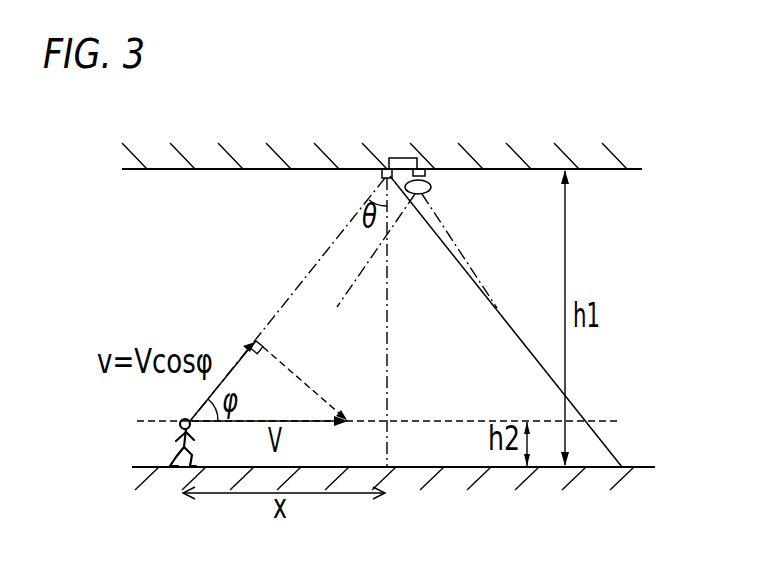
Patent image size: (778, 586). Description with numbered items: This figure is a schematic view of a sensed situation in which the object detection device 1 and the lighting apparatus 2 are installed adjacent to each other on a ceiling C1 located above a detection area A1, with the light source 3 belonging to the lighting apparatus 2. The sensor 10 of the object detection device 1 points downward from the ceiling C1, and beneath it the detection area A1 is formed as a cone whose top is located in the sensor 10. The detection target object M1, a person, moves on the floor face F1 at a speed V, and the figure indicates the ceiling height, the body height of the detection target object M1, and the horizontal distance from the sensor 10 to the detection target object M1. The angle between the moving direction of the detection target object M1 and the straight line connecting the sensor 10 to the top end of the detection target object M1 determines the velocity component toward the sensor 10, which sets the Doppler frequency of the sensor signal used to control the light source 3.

The object detection device 1 is at (388, 167).
The lighting apparatus 2 is at (428, 176).
The light source 3 is at (431, 186).
The sensor 10 is at (383, 170).
The detection area A1 is at (285, 302).
The ceiling C1 is at (607, 169).
The floor face F1 is at (637, 467).
The detection target object M1 is at (147, 442).